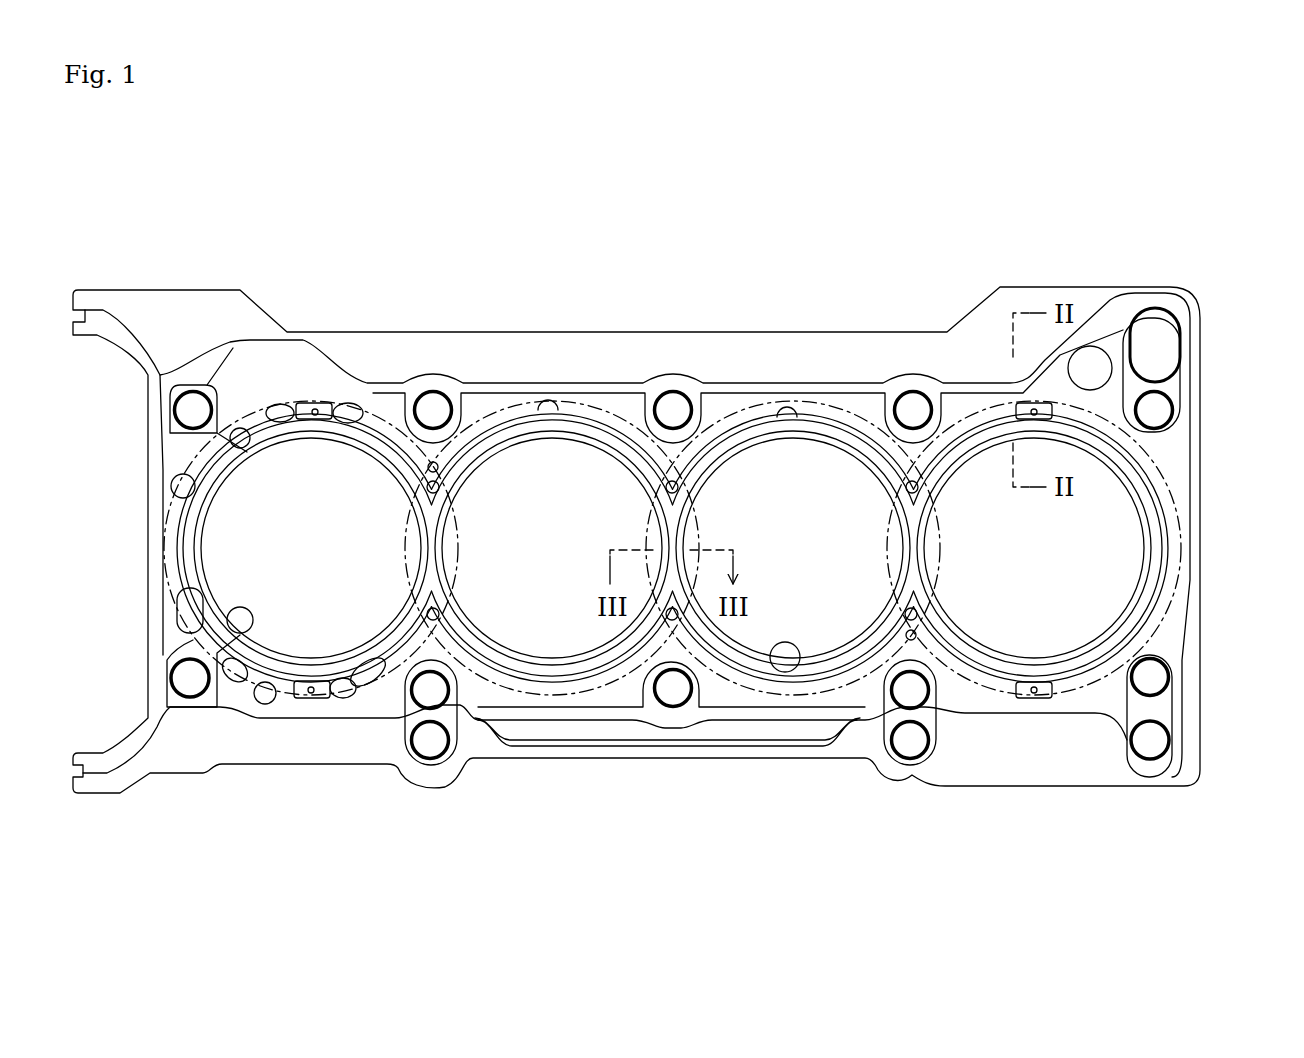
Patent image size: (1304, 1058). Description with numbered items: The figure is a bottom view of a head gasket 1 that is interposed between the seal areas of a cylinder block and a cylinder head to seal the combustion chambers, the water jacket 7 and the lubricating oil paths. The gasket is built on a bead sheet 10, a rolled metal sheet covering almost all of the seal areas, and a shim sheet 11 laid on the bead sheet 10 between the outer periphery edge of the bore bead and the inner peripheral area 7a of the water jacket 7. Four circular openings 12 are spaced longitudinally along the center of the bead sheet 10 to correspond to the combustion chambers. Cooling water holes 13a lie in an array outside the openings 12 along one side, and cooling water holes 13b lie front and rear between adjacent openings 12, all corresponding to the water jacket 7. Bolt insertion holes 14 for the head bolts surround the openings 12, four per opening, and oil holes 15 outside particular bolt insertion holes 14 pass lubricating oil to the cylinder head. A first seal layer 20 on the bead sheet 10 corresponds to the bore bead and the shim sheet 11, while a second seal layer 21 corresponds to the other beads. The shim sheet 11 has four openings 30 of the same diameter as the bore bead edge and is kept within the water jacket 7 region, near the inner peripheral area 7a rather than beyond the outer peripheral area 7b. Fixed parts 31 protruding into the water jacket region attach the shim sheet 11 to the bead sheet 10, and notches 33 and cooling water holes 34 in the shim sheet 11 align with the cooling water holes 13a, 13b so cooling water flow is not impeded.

The head gasket 1 is at (1058, 230).
The water jacket 7 is at (722, 430).
The inner peripheral area of the water jacket 7a is at (795, 420).
The outer peripheral area of the water jacket 7b is at (548, 404).
The bead sheet 10 is at (770, 328).
The shim sheet 11 is at (818, 412).
The opening 12 is at (327, 567).
The cooling water hole 13a is at (255, 410).
The cooling water hole 13b is at (437, 614).
The bolt insertion hole 14 is at (433, 403).
The oil hole 15 is at (430, 740).
The first seal layer 20 is at (917, 550).
The second seal layer 21 is at (1190, 333).
The opening 30 is at (250, 622).
The fixed part 31 is at (308, 403).
The notch 33 is at (243, 447).
The cooling water hole 34 is at (436, 488).